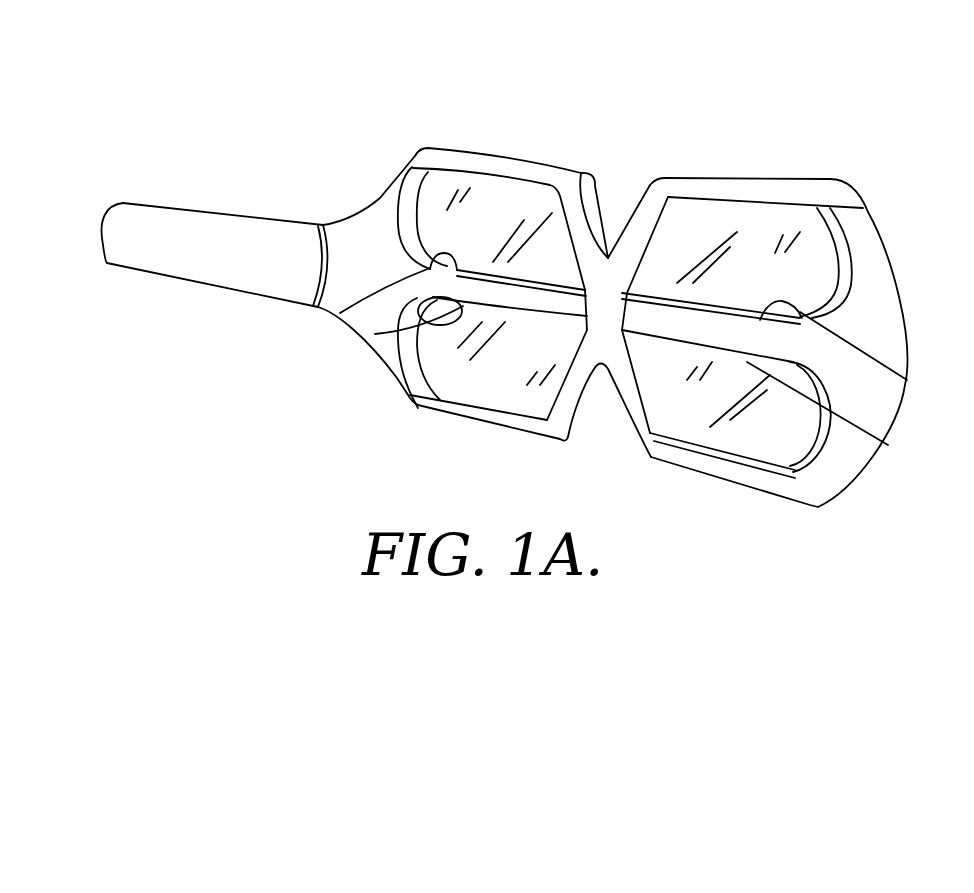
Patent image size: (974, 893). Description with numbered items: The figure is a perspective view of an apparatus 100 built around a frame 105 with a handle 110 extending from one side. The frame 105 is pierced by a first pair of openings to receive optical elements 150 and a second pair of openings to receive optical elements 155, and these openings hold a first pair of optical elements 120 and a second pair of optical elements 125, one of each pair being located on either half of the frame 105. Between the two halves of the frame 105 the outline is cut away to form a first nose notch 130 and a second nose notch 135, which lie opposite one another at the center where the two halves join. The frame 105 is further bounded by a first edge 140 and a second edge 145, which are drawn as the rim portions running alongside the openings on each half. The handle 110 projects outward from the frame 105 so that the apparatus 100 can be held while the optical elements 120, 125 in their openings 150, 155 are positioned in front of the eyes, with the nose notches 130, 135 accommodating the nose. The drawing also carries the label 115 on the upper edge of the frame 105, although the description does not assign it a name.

The apparatus 100 is at (243, 95).
The frame 105 is at (898, 284).
The handle 110 is at (194, 283).
The top edge of body 115 is at (699, 177).
The first pair of optical elements 120 is at (497, 397).
The second pair of optical elements 125 is at (505, 192).
The first nose notch 130 is at (603, 441).
The second nose notch 135 is at (612, 180).
The first edge 140 is at (378, 333).
The second edge 145 is at (340, 313).
The first pair of openings to receive optical elements 150 is at (430, 381).
The second pair of openings to receive optical elements 155 is at (428, 207).